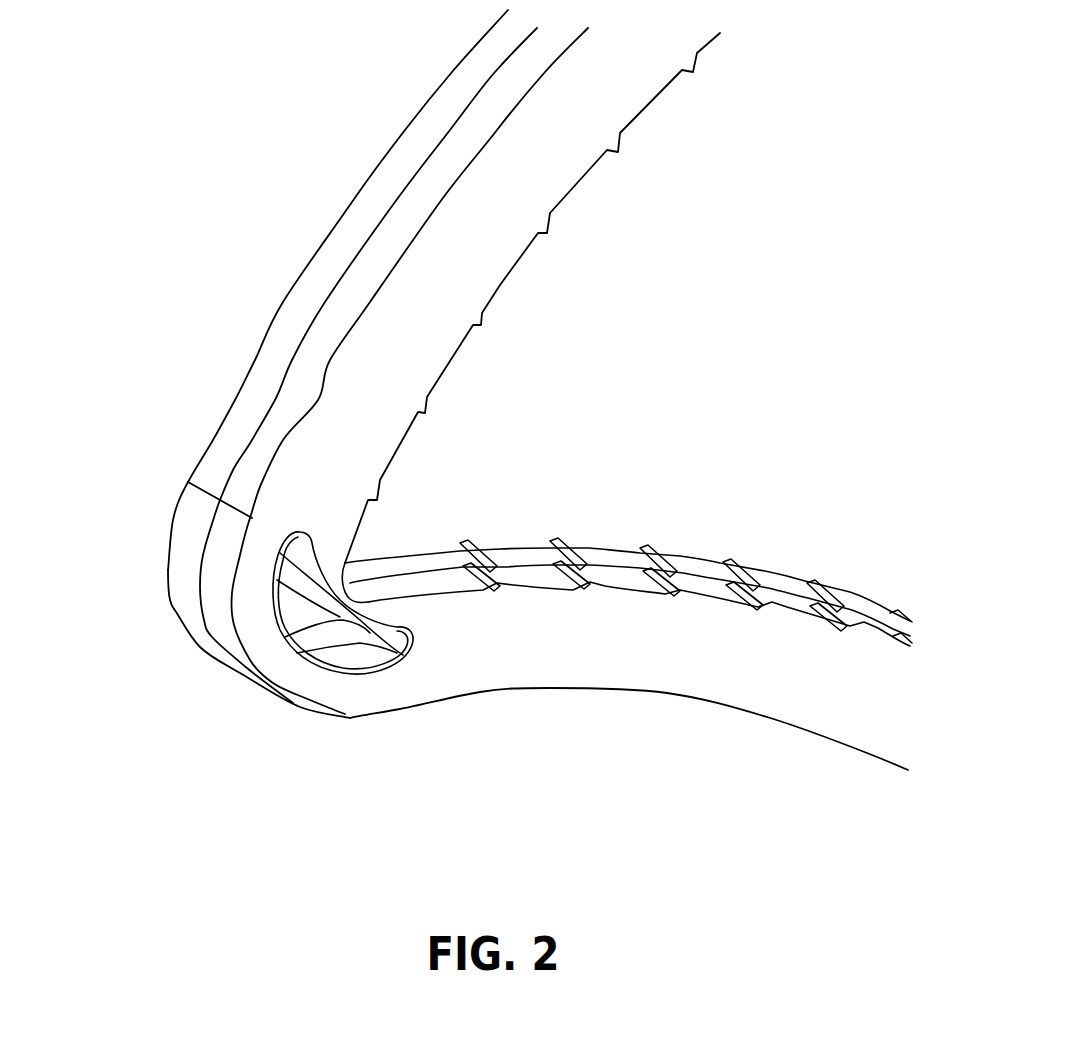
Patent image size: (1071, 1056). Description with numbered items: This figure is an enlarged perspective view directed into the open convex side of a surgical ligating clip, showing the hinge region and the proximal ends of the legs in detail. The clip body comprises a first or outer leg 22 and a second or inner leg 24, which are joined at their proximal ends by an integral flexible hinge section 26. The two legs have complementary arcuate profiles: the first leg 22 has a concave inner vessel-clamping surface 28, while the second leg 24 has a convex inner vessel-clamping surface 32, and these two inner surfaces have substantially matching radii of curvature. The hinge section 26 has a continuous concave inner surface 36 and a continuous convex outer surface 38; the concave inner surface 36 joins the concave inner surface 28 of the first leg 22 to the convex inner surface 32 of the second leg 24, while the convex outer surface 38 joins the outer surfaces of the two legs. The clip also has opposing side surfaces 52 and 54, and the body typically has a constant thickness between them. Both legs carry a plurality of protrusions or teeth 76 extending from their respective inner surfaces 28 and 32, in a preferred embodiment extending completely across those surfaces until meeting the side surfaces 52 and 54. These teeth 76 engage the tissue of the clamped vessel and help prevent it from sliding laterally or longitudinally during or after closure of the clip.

The first leg 22 is at (378, 362).
The second leg 24 is at (648, 712).
The hinge section 26 is at (140, 577).
The concave inner vessel-clamping surface 28 is at (500, 285).
The convex inner vessel-clamping surface 32 is at (620, 550).
The concave inner surface 36 is at (360, 605).
The convex outer surface 38 is at (250, 667).
The side surface 52 is at (307, 267).
The side surface 54 is at (465, 235).
The protrusions or teeth 76 is at (548, 235).